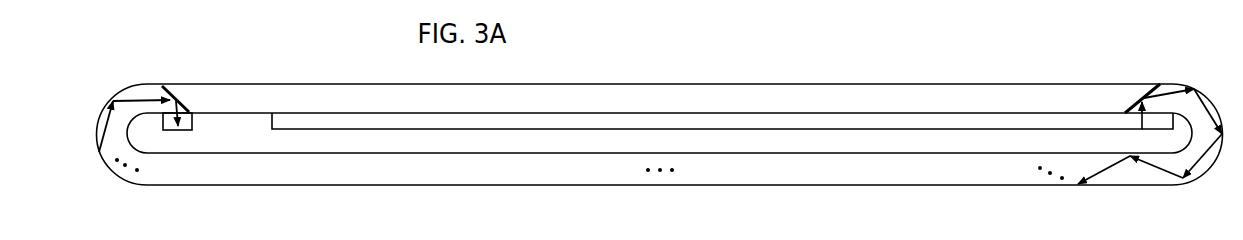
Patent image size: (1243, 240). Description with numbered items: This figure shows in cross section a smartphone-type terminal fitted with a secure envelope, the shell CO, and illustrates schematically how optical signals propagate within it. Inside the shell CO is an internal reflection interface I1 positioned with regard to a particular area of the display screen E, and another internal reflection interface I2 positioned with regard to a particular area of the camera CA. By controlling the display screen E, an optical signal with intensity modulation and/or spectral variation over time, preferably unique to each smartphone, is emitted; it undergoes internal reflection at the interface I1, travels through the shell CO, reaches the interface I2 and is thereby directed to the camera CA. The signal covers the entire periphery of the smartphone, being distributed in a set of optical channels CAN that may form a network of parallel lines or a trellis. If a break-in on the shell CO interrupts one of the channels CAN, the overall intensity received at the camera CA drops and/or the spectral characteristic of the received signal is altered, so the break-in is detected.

The shell CO is at (356, 101).
The optical channels CAN is at (1126, 173).
The display screen E is at (662, 123).
The camera CA is at (196, 122).
The internal reflection interface I2 is at (181, 112).
The internal reflection interface I1 is at (1134, 104).